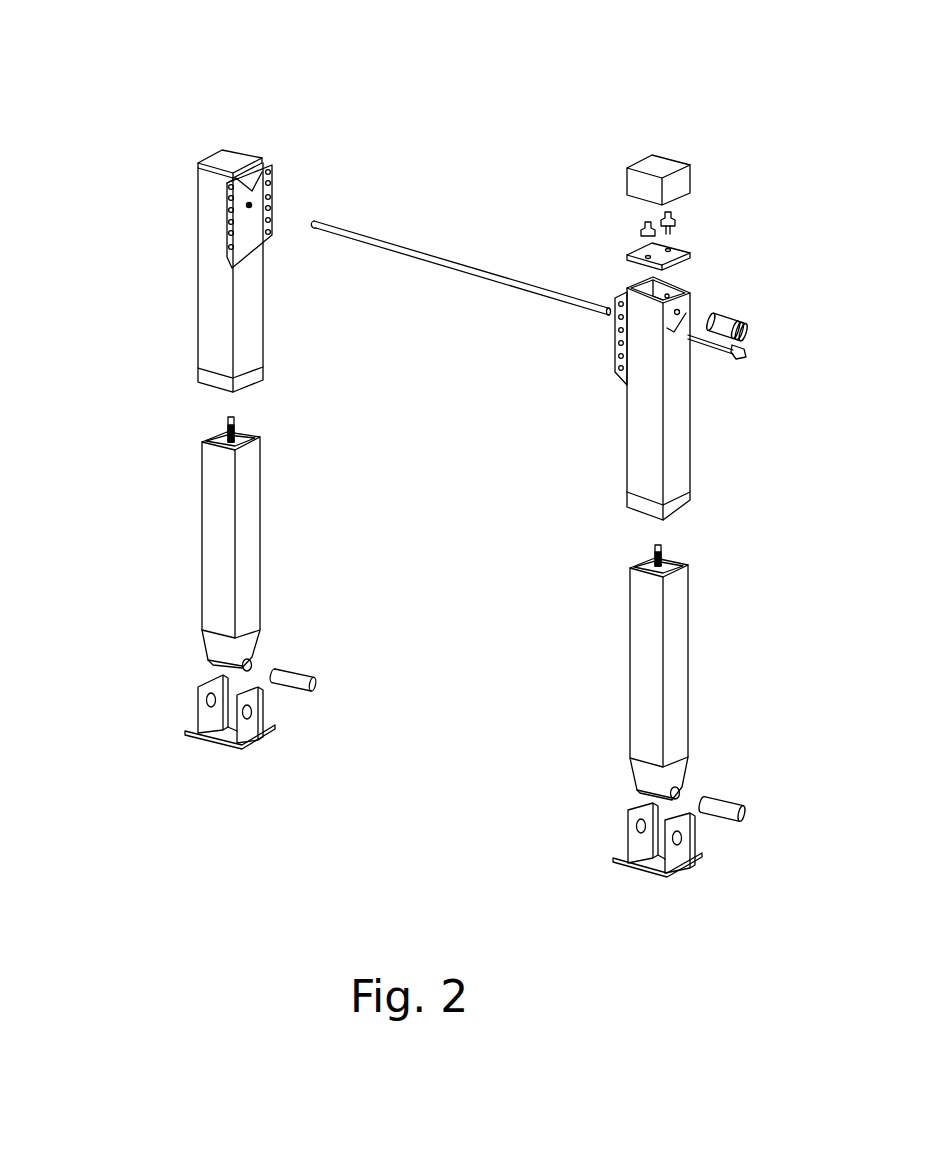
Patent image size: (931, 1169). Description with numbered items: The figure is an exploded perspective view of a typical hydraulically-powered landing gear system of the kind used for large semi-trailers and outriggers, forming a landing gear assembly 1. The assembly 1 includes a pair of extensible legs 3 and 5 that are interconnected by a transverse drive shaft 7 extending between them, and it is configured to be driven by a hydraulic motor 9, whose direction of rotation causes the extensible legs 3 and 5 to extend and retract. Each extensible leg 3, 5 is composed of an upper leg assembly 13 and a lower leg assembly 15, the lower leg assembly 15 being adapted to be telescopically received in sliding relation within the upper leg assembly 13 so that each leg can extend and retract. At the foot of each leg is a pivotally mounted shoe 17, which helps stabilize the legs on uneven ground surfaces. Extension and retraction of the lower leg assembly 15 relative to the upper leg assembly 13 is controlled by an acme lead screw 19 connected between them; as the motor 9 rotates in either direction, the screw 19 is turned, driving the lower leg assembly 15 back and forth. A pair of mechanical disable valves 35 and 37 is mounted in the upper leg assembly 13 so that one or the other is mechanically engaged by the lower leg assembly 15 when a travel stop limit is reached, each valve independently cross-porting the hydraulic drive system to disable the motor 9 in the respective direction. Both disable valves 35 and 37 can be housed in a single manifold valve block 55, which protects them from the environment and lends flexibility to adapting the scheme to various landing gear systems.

The landing gear assembly 1 is at (693, 87).
The extensible leg 3 is at (725, 460).
The extensible leg 5 is at (122, 417).
The transverse drive shaft 7 is at (428, 284).
The hydraulic motor 9 is at (727, 313).
The upper leg assembly 13 is at (202, 292).
The lower leg assembly 15 is at (202, 577).
The shoe 17 is at (688, 860).
The acme lead screw 19 is at (665, 565).
The mechanical disable valve 35 is at (641, 228).
The mechanical disable valve 37 is at (676, 222).
The manifold valve block 55 is at (680, 180).